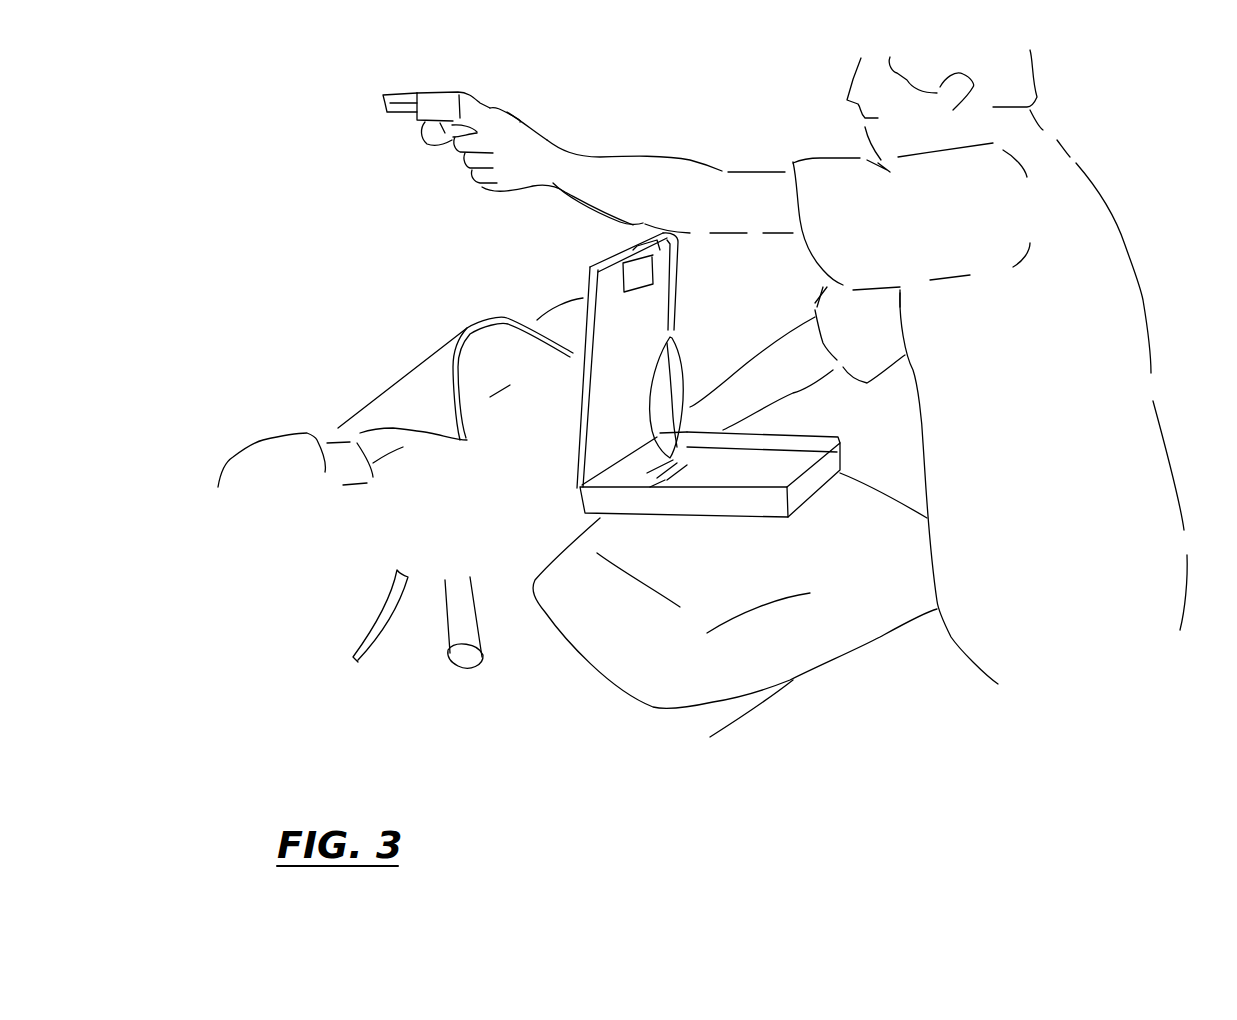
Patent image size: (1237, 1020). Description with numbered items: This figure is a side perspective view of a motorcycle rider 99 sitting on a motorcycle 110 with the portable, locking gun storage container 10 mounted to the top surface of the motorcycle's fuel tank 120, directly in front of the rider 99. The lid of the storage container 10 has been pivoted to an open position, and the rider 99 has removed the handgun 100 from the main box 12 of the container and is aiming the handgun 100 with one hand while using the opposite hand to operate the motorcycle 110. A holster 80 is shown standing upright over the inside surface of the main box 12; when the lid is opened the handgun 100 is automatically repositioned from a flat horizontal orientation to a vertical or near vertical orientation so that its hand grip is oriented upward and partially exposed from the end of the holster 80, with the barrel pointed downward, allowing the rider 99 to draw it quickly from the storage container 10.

The gun storage container 10 is at (566, 286).
The main box 12 is at (810, 442).
The holster 80 is at (638, 416).
The motorcycle rider 99 is at (1084, 160).
The handgun 100 is at (411, 87).
The motorcycle 110 is at (358, 400).
The fuel tank 120 is at (568, 542).